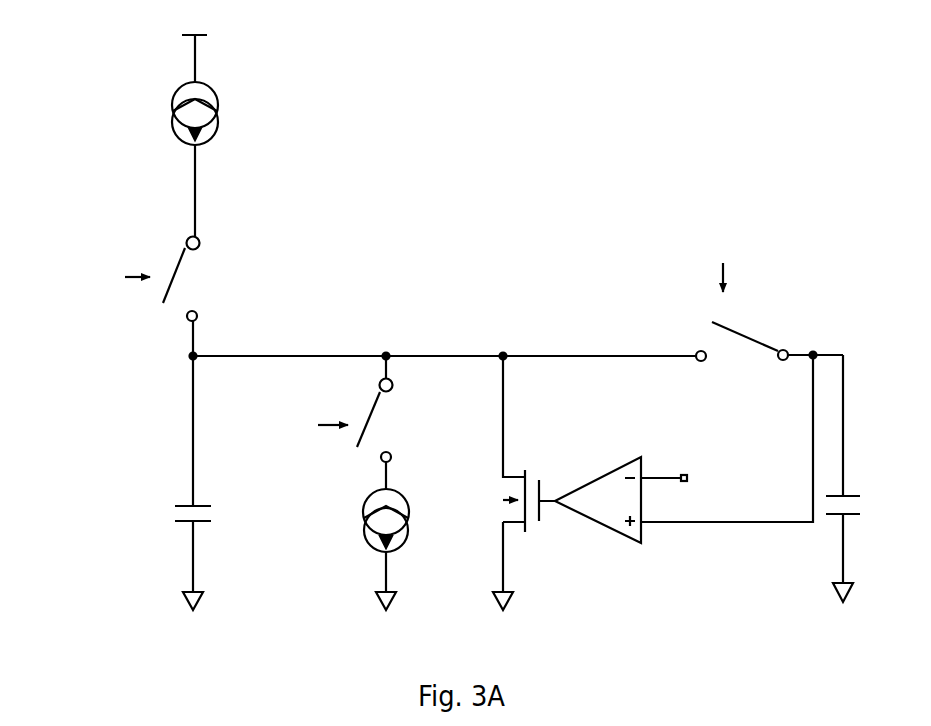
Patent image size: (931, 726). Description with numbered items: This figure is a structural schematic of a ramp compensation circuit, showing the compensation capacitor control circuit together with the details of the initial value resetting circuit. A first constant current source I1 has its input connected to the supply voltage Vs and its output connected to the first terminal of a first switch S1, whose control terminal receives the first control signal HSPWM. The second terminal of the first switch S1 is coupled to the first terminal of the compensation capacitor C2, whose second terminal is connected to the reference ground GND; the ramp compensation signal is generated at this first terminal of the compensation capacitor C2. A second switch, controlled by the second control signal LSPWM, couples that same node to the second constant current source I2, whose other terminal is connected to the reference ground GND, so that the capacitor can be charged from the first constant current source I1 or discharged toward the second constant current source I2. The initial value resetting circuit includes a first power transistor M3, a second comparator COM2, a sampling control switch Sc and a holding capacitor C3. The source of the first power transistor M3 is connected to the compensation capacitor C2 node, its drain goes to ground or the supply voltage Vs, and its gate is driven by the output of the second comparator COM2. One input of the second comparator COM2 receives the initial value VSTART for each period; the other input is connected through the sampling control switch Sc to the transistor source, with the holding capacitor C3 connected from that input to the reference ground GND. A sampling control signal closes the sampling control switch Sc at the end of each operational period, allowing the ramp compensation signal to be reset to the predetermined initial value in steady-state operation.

The supply voltage Vs is at (198, 42).
The first constant current source I1 is at (167, 159).
The first switch S1 is at (207, 297).
The first control signal HSPWM is at (87, 281).
The compensation capacitor C2 is at (164, 483).
The reference ground GND is at (525, 619).
The second control signal LSPWM is at (285, 429).
The second constant current source I2 is at (362, 483).
The first power transistor M3 is at (503, 483).
The second comparator COM2 is at (684, 449).
The initial value VSTART is at (745, 480).
The sampling control switch Sc is at (761, 300).
The holding capacitor C3 is at (871, 469).